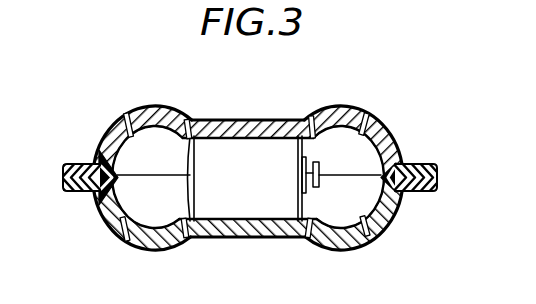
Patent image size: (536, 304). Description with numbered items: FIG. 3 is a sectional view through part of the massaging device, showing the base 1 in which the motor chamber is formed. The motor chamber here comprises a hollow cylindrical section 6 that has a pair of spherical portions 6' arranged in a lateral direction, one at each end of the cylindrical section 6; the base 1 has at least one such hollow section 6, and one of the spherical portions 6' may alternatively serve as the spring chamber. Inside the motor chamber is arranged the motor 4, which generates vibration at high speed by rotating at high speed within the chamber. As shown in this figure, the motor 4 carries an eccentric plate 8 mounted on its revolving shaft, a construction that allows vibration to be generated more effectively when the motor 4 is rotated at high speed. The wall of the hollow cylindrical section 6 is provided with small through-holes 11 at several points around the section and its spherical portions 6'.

The base 1 is at (80, 196).
The motor 4 is at (244, 142).
The hollow cylindrical section 6 is at (248, 158).
The spherical portions 6' is at (248, 182).
The eccentric plate 8 is at (323, 164).
The small through-holes 11 is at (126, 120).